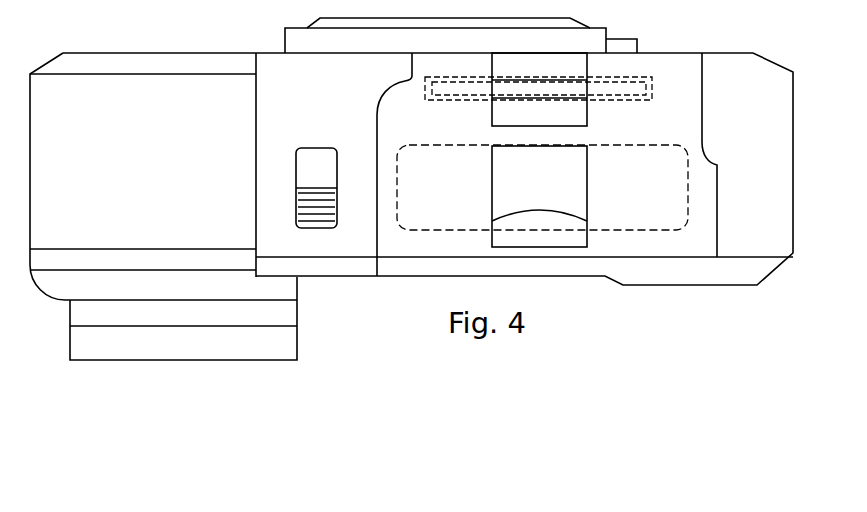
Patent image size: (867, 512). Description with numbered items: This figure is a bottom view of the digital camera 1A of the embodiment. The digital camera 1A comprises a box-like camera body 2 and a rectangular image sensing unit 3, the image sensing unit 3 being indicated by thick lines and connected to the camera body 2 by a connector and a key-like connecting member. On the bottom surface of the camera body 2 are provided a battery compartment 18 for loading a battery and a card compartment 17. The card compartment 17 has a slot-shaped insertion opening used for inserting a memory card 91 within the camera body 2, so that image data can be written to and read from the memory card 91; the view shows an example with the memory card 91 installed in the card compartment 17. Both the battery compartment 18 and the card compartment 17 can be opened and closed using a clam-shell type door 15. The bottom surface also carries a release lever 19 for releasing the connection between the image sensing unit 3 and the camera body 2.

The digital camera 1A is at (623, 336).
The camera body 2 is at (368, 305).
The image sensing unit 3 is at (237, 377).
The clam-shell type door 15 is at (698, 188).
The card compartment 17 is at (637, 77).
The battery compartment 18 is at (653, 145).
The release lever 19 is at (316, 148).
The memory card 91 is at (573, 87).